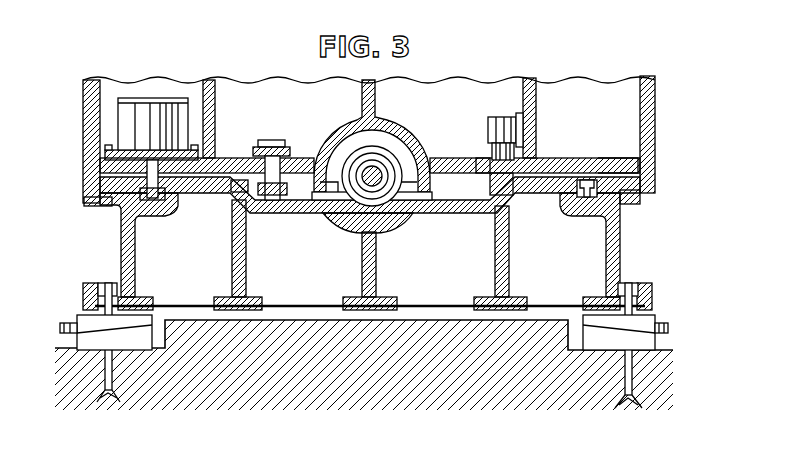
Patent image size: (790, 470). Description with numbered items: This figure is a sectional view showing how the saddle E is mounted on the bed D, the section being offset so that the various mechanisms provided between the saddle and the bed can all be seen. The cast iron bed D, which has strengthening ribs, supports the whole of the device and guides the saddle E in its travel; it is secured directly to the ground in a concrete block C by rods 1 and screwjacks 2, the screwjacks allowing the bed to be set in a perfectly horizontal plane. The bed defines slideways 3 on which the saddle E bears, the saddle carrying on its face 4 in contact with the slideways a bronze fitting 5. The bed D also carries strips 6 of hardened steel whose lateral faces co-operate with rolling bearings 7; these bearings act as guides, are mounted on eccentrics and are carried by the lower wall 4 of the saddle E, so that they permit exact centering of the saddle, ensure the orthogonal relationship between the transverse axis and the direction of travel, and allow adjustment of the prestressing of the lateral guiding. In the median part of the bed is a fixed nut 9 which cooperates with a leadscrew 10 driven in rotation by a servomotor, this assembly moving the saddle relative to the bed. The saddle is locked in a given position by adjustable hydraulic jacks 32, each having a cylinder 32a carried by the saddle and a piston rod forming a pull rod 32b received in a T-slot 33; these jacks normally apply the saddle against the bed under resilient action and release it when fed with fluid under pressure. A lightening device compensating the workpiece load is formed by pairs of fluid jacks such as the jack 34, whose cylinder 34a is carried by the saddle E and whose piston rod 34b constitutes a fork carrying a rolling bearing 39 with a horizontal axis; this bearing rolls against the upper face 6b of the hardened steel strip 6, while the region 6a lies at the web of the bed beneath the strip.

The rod 1 is at (632, 365).
The screwjack 2 is at (658, 318).
The slideway 3 is at (645, 152).
The lower wall of the saddle 4 is at (560, 172).
The bronze fitting 5 is at (602, 170).
The hardened steel strip 6 is at (497, 212).
The frame web 6a is at (247, 200).
The upper face of the hardened steel strip 6b is at (482, 176).
The rolling bearing 7 is at (288, 183).
The fixed nut 9 is at (372, 143).
The leadscrew 10 is at (374, 172).
The adjustable hydraulic jack 32 is at (148, 97).
The cylinder 32a is at (165, 108).
The pull rod 32b is at (155, 197).
The T-slot 33 is at (125, 212).
The fluid jack 34 is at (505, 117).
The cylinder 34a is at (524, 122).
The piston rod 34b is at (497, 163).
The rolling bearing 39 is at (518, 160).
The concrete block C is at (364, 365).
The bed D is at (370, 243).
The saddle E is at (378, 139).